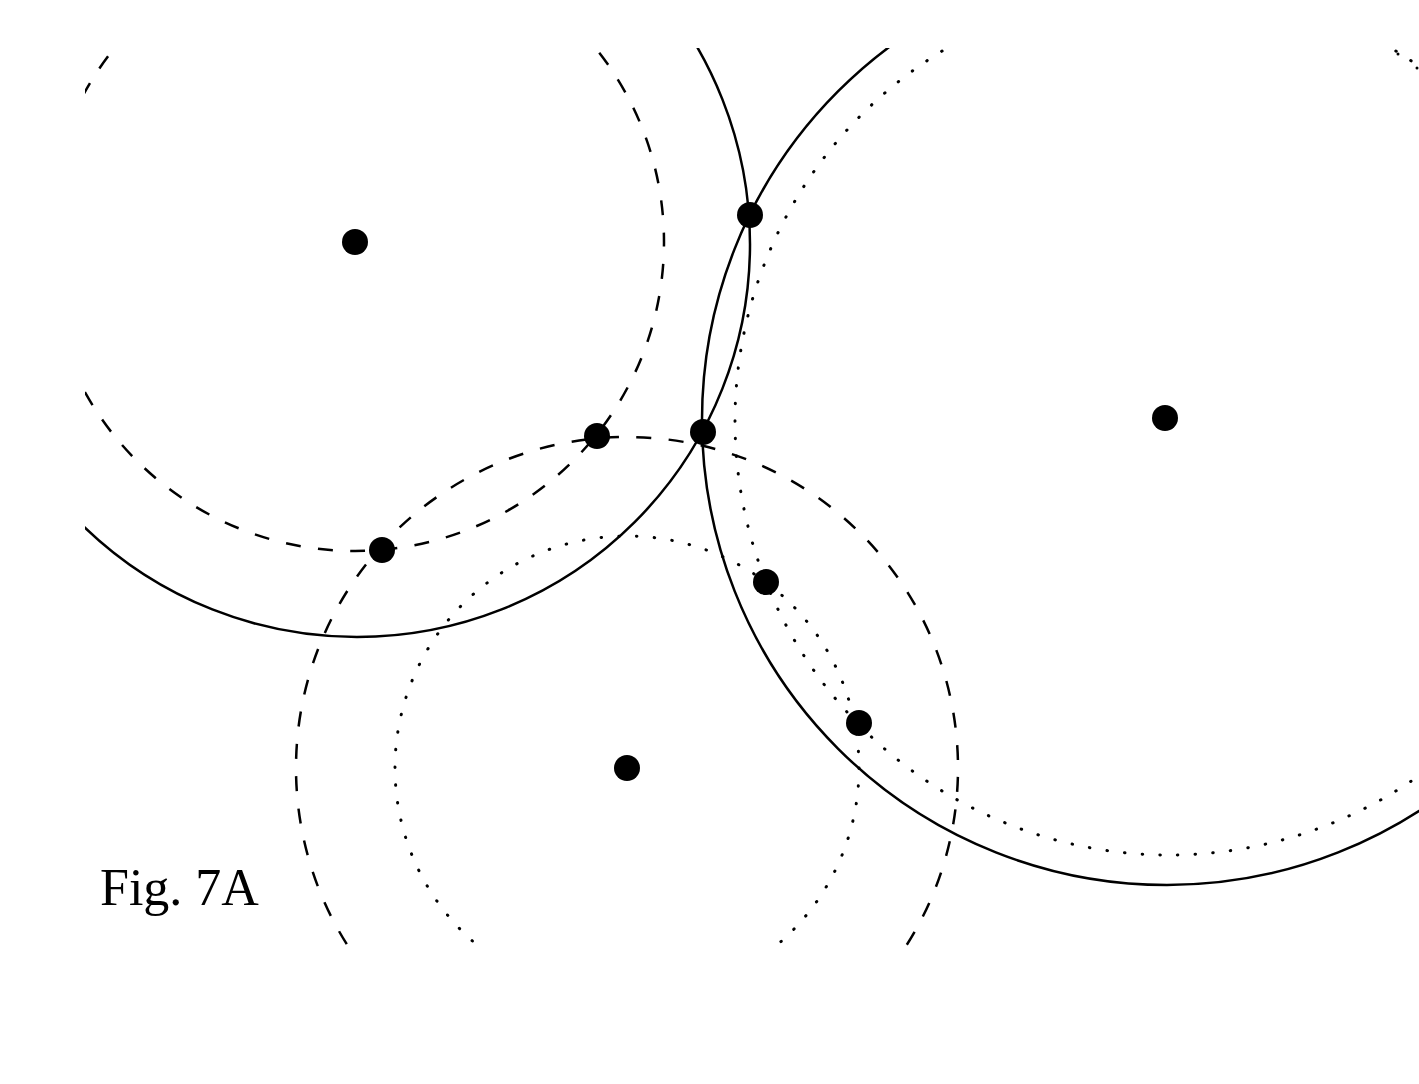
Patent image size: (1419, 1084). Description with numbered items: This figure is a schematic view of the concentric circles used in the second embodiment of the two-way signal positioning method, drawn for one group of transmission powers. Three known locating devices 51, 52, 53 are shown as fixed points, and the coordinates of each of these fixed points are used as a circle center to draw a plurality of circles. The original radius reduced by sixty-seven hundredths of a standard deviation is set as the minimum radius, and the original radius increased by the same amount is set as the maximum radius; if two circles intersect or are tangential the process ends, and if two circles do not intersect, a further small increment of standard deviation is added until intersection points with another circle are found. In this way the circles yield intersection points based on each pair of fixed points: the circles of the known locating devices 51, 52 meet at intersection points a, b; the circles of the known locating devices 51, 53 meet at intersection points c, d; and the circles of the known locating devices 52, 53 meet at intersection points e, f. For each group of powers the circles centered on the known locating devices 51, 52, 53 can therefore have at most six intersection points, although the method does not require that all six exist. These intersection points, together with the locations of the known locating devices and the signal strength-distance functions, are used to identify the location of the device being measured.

The known locating device 51 is at (355, 232).
The known locating device 52 is at (1164, 408).
The known locating device 53 is at (625, 758).
The intersection point a is at (762, 217).
The intersection point b is at (692, 431).
The intersection point c is at (590, 428).
The intersection point d is at (375, 540).
The intersection point e is at (778, 581).
The intersection point f is at (871, 721).